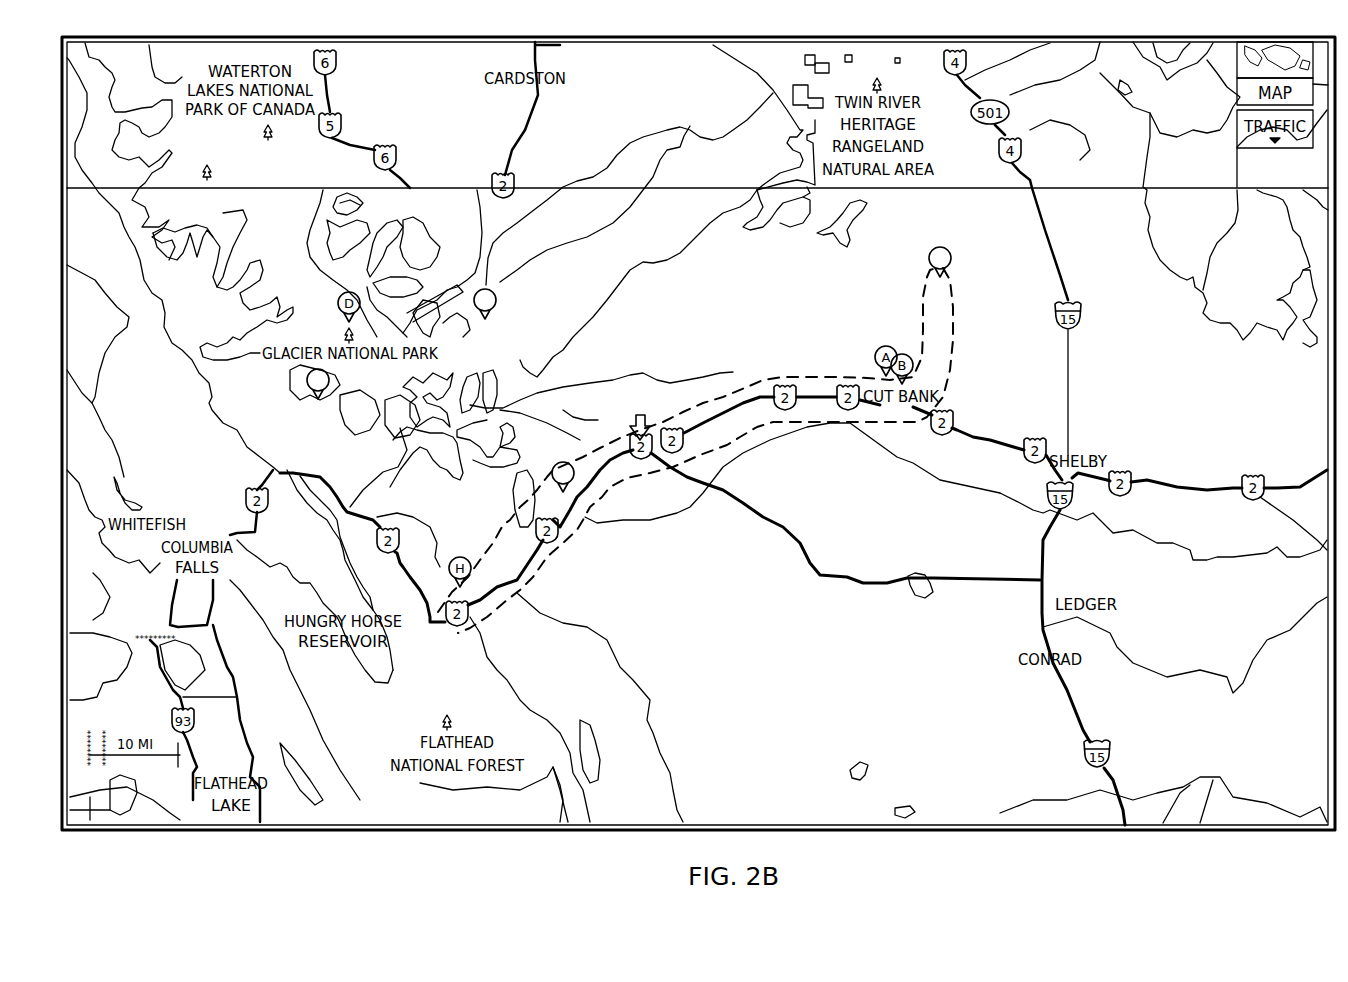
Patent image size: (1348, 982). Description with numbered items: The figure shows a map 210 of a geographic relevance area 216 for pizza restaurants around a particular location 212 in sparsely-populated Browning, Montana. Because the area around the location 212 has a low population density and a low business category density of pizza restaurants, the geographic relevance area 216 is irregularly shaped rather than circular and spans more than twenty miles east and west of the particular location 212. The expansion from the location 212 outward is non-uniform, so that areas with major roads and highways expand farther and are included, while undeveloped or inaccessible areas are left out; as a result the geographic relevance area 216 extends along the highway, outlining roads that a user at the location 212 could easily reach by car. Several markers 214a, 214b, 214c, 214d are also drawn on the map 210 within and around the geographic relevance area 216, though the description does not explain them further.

The map 210 is at (130, 37).
The particular location 212 is at (636, 414).
The point of interest marker H 214a is at (494, 291).
The point of interest marker C 214b is at (312, 395).
The point of interest marker G 214c is at (567, 492).
The point of interest marker J 214d is at (952, 262).
The geographic relevance area 216 is at (725, 393).